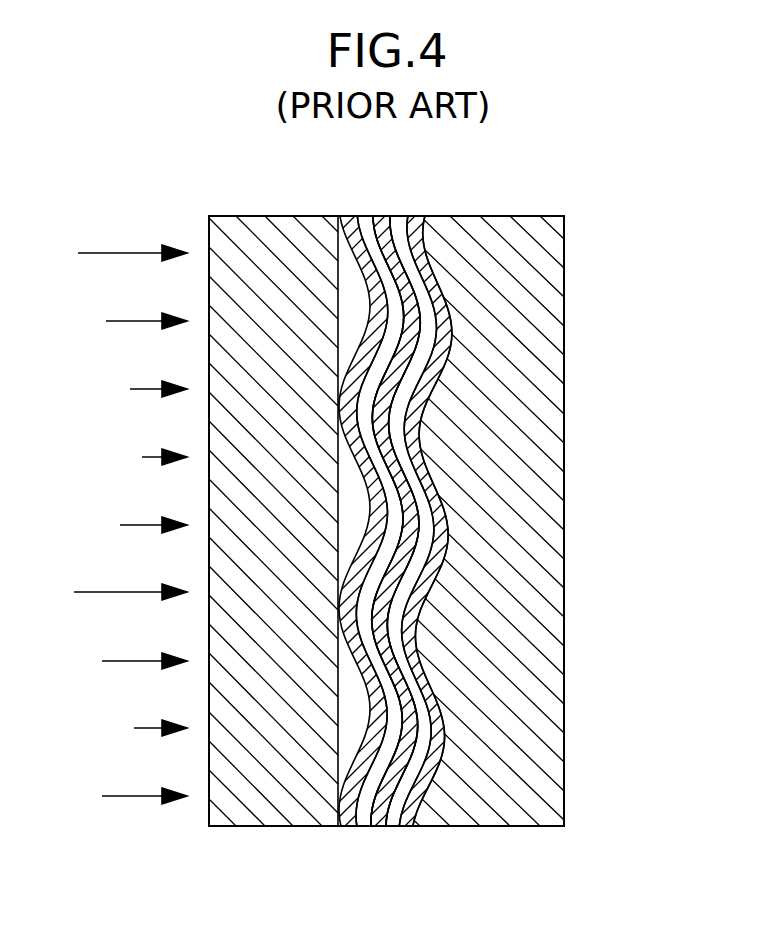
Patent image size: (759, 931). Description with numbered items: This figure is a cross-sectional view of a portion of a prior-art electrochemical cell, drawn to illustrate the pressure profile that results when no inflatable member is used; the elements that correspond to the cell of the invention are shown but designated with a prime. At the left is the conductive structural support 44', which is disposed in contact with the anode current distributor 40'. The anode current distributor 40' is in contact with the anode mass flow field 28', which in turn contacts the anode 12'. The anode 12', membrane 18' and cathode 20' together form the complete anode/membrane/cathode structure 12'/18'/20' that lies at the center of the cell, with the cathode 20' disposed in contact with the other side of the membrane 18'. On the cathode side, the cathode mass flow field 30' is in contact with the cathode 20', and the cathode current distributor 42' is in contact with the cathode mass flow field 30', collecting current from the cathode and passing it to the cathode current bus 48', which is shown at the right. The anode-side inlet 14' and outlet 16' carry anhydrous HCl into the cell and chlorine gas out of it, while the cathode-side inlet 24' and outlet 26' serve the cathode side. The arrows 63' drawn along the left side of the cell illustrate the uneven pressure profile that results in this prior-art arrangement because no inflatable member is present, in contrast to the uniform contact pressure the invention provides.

The arrows 63' is at (130, 505).
The conductive structural support 44' is at (267, 500).
The outlet 16' is at (347, 518).
The outlet 26' is at (433, 524).
The cathode current bus 48' is at (479, 531).
The cathode current distributor 42' is at (518, 528).
The cathode mass flow field 30' is at (511, 526).
The anode 12' is at (549, 521).
The membrane 18' is at (549, 521).
The cathode 20' is at (549, 521).
The anode mass flow field 28' is at (453, 516).
The anode current distributor 40' is at (488, 510).
The inlet 14' is at (453, 516).
The inlet 24' is at (511, 526).